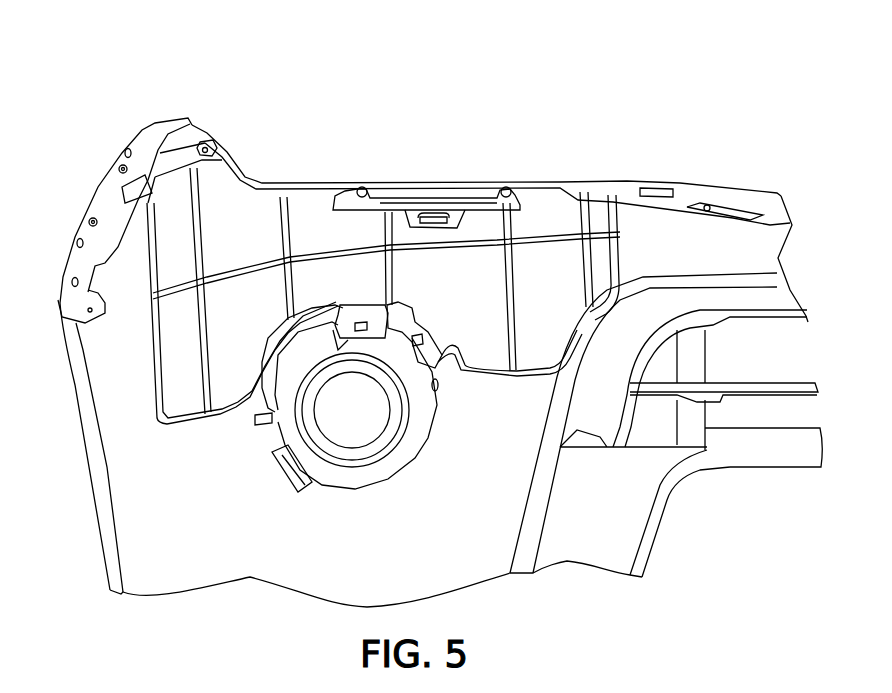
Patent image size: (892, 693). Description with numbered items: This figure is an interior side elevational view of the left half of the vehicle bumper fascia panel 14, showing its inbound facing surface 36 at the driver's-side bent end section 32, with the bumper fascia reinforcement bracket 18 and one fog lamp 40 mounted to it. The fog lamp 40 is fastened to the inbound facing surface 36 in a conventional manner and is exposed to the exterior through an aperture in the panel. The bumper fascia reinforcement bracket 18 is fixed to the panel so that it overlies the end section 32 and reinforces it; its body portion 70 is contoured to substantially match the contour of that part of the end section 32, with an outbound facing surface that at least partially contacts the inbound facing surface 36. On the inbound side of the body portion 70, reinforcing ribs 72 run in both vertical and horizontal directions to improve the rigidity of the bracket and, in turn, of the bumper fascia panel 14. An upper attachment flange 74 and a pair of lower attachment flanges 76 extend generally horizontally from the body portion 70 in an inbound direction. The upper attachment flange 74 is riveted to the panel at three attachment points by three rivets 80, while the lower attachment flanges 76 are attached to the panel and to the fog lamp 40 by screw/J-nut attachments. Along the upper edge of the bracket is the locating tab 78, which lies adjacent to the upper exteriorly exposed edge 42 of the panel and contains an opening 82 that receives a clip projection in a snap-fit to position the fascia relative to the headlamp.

The vehicle bumper fascia panel 14 is at (428, 84).
The bumper fascia reinforcement bracket 18 is at (542, 210).
The bent end section 32 is at (120, 353).
The inbound facing surface 36 is at (183, 567).
The fog lamp 40 is at (372, 470).
The upper exteriorly exposed edge 42 is at (313, 178).
The body portion 70 is at (183, 390).
The reinforcing ribs 72 is at (286, 308).
The upper attachment flange 74 is at (478, 198).
The lower attachment flanges 76 is at (350, 323).
The locating tab 78 is at (452, 213).
The rivets 80 is at (203, 152).
The opening 82 is at (424, 215).